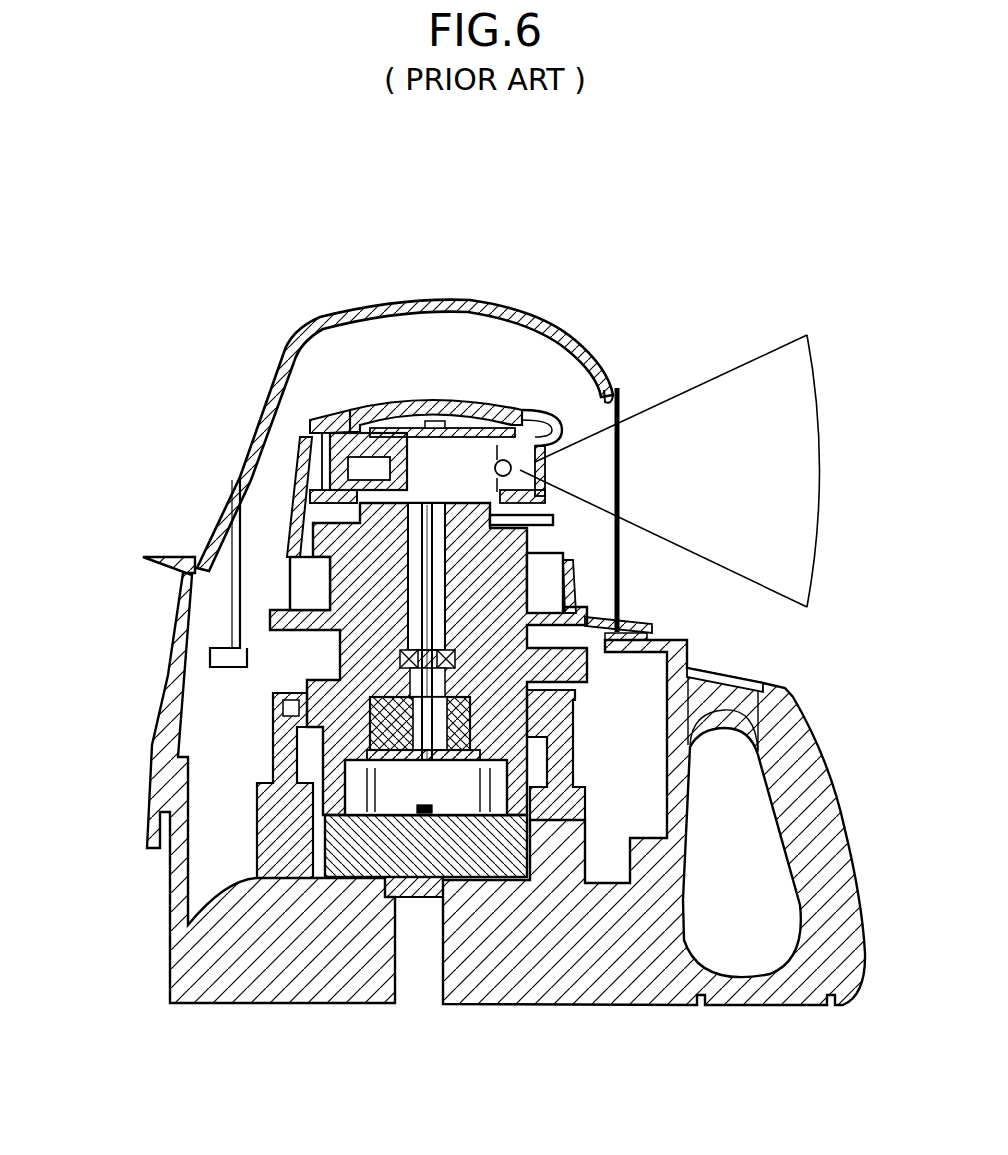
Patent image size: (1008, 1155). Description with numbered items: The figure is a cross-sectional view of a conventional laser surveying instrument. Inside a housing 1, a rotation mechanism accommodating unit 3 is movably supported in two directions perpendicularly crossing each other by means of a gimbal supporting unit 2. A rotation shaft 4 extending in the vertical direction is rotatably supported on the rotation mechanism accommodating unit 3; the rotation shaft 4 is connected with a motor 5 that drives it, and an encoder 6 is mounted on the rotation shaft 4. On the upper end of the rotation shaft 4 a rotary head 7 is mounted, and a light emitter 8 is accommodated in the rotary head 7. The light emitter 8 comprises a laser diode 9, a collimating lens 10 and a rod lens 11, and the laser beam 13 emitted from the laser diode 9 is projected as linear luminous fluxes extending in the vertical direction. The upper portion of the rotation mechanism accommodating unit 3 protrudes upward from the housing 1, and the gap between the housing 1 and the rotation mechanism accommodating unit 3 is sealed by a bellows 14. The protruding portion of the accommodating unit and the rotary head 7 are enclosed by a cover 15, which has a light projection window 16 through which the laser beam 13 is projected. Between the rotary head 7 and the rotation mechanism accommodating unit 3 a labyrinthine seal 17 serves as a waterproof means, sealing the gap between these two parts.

The housing 1 is at (148, 762).
The gimbal supporting unit 2 is at (573, 747).
The rotation mechanism accommodating unit 3 is at (343, 650).
The rotation shaft 4 is at (413, 590).
The motor 5 is at (477, 777).
The encoder 6 is at (365, 717).
The rotary head 7 is at (303, 493).
The light emitter 8 is at (423, 437).
The laser diode 9 is at (305, 437).
The collimating lens 10 is at (407, 473).
The rod lens 11 is at (492, 455).
The laser beam 13 is at (745, 360).
The bellows 14 is at (630, 627).
The cover 15 is at (325, 305).
The light projection window 16 is at (613, 457).
The labyrinthine seal 17 is at (505, 527).